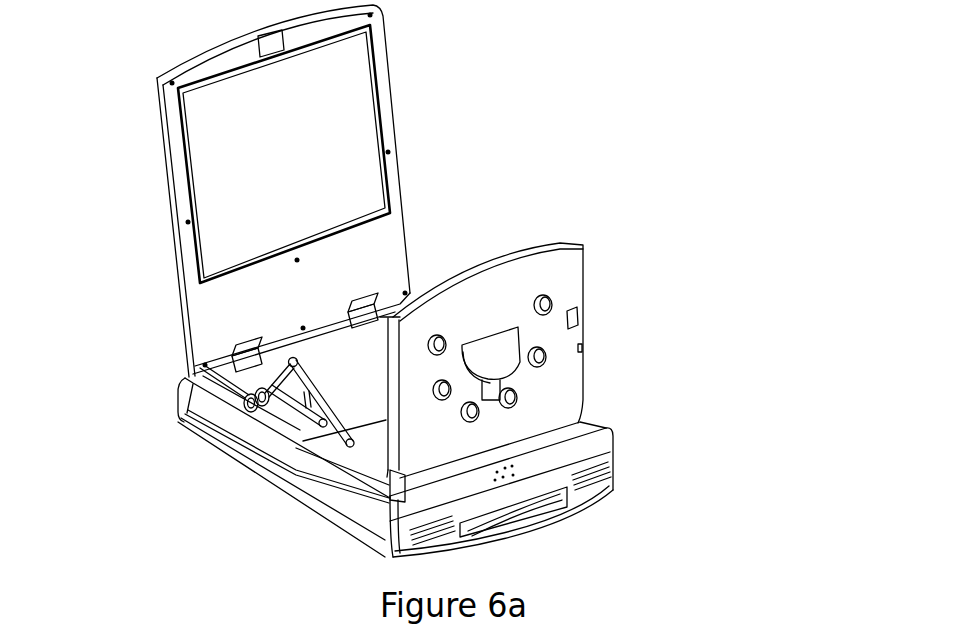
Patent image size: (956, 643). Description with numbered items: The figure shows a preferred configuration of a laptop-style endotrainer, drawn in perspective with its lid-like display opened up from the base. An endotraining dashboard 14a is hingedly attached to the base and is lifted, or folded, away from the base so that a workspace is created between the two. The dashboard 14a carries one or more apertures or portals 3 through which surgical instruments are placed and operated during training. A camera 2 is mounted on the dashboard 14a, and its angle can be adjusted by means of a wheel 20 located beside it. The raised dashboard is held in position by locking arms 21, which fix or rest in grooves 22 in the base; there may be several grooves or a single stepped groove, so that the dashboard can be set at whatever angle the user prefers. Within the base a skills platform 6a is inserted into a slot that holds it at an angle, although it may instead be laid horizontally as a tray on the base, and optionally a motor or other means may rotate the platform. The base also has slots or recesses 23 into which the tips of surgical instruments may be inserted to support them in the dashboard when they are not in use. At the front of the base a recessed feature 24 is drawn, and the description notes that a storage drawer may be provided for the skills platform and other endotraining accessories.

The skills platform 6a is at (344, 360).
The slots or recesses 23 is at (237, 406).
The locking arms 21 is at (359, 462).
The grooves 22 is at (346, 484).
The endotraining dashboard 14a is at (566, 277).
The wheel 20 is at (590, 319).
The camera 2 is at (516, 349).
The apertures or portals 3 is at (528, 402).
The handle recess 24 is at (530, 511).